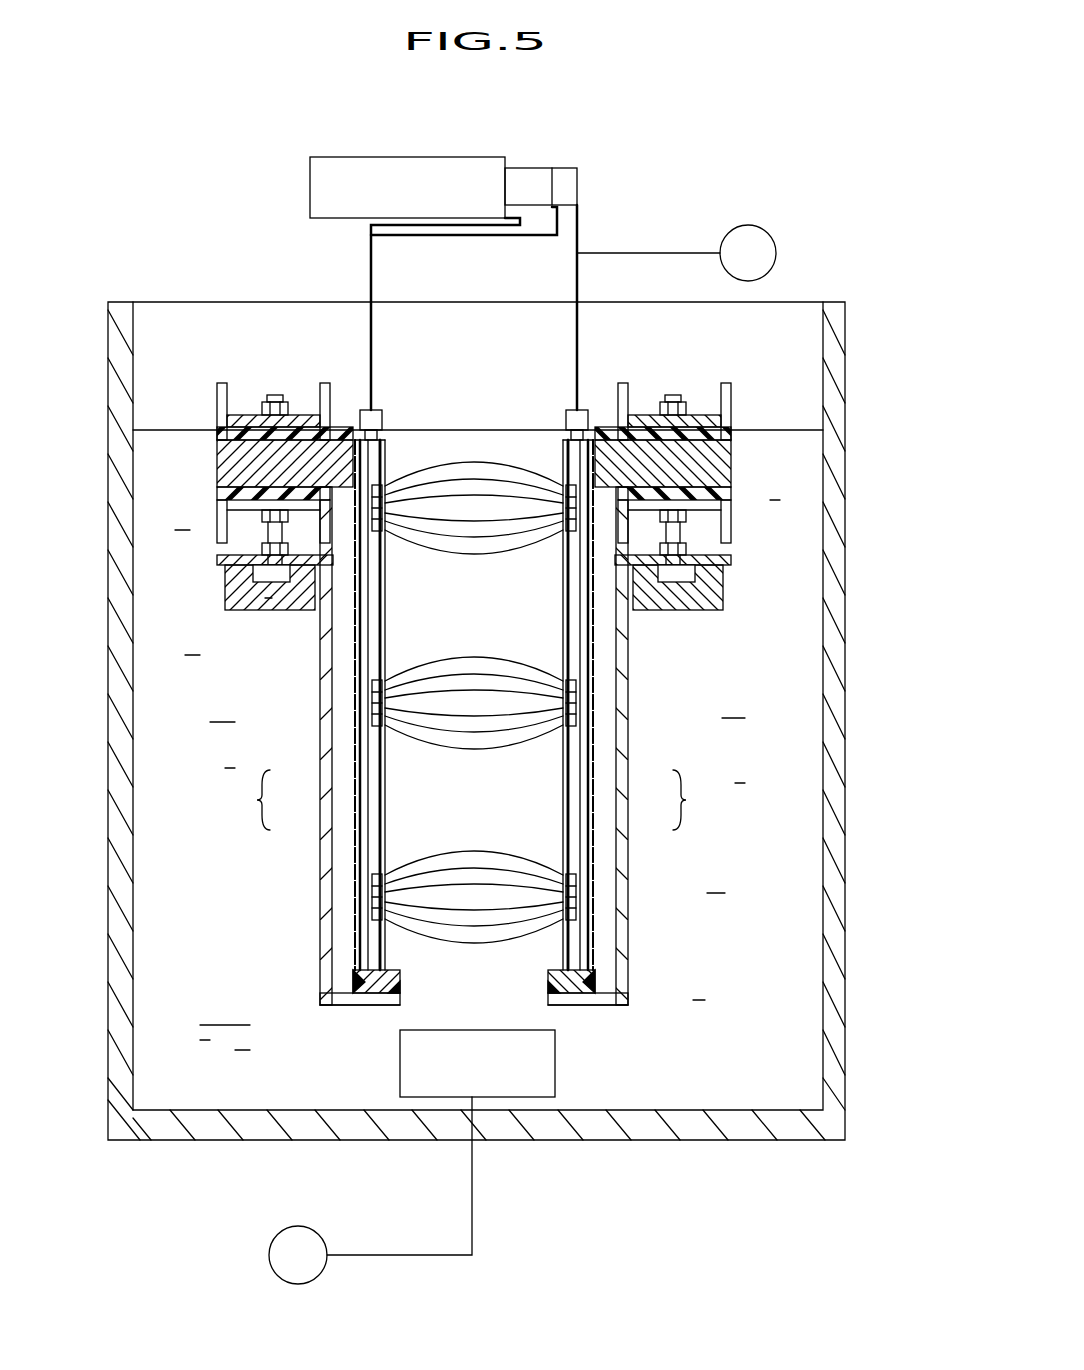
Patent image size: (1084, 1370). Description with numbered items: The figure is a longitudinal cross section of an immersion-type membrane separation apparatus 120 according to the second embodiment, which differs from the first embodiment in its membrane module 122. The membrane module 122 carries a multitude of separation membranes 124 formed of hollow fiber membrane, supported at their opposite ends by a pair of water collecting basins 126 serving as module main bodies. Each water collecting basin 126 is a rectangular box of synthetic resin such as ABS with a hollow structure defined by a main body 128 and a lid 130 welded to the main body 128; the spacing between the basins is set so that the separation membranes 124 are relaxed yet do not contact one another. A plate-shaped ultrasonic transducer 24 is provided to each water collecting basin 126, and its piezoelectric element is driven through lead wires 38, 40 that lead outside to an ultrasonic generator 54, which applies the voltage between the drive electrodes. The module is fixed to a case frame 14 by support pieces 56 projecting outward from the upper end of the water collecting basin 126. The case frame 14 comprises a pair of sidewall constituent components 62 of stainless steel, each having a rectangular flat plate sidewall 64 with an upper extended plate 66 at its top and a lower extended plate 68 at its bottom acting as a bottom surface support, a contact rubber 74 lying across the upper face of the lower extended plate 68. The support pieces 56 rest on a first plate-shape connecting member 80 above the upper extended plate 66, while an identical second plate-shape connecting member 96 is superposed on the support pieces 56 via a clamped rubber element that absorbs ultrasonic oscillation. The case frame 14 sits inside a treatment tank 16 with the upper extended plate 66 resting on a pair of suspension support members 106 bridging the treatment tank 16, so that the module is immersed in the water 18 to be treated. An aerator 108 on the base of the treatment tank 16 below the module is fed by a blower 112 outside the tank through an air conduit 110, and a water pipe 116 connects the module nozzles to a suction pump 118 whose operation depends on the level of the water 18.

The case frame 14 is at (633, 688).
The treatment tank 16 is at (836, 525).
The water to be treated 18 is at (800, 645).
The ultrasonic transducer 24 is at (372, 490).
The lead wire 38 is at (538, 168).
The lead wire 40 is at (535, 200).
The ultrasonic generator 54 is at (457, 160).
The support piece 56 is at (225, 463).
The sidewall constituent component 62 is at (318, 678).
The sidewall 64 is at (322, 945).
The upper extended plate 66 is at (218, 562).
The lower extended plate 68 is at (350, 1003).
The contact rubber 74 is at (385, 983).
The first plate-shape connecting member 80 is at (212, 507).
The second plate-shape connecting member 96 is at (212, 368).
The suspension support member 106 is at (222, 604).
The aerator 108 is at (535, 1060).
The air conduit 110 is at (472, 1178).
The blower 112 is at (312, 1268).
The water pipe 116 is at (628, 253).
The suction pump 118 is at (748, 235).
The immersion-type membrane separation apparatus 120 is at (848, 295).
The membrane module 122 is at (604, 630).
The separation membrane 124 is at (415, 560).
The water collecting basin 126 is at (473, 800).
The main body 128 is at (380, 812).
The lid 130 is at (355, 785).